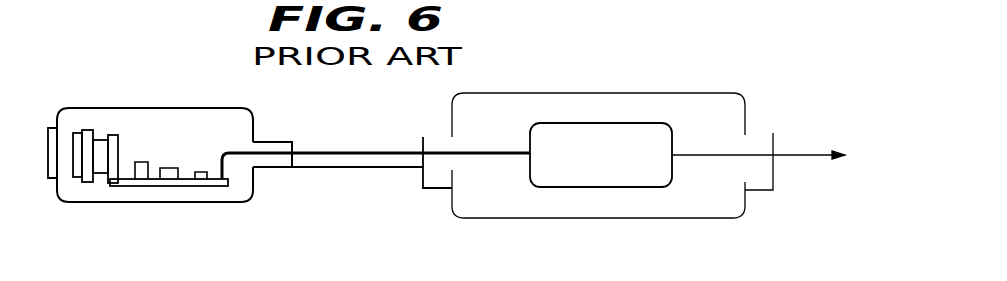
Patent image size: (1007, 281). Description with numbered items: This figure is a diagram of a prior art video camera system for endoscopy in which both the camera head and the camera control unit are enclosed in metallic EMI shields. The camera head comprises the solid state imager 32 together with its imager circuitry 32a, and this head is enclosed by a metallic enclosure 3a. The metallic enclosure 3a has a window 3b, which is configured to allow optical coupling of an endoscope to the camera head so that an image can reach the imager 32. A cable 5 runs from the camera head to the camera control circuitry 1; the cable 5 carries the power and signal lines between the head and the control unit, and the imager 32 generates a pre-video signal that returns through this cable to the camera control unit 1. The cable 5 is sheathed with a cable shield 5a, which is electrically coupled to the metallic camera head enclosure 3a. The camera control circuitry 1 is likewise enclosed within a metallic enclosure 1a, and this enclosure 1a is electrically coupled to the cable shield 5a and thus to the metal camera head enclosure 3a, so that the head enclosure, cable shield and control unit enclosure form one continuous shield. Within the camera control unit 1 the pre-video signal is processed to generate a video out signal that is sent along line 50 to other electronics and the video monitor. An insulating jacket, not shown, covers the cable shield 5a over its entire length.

The camera control unit 1 is at (601, 155).
The metallic enclosure of camera control circuitry 1a is at (728, 93).
The metallic camera head enclosure 3a is at (202, 203).
The window 3b is at (48, 180).
The cable 5 is at (365, 152).
The cable shield 5a is at (327, 170).
The solid state imager 32 is at (84, 119).
The imager circuitry 32a is at (183, 170).
The video out line 50 is at (808, 152).